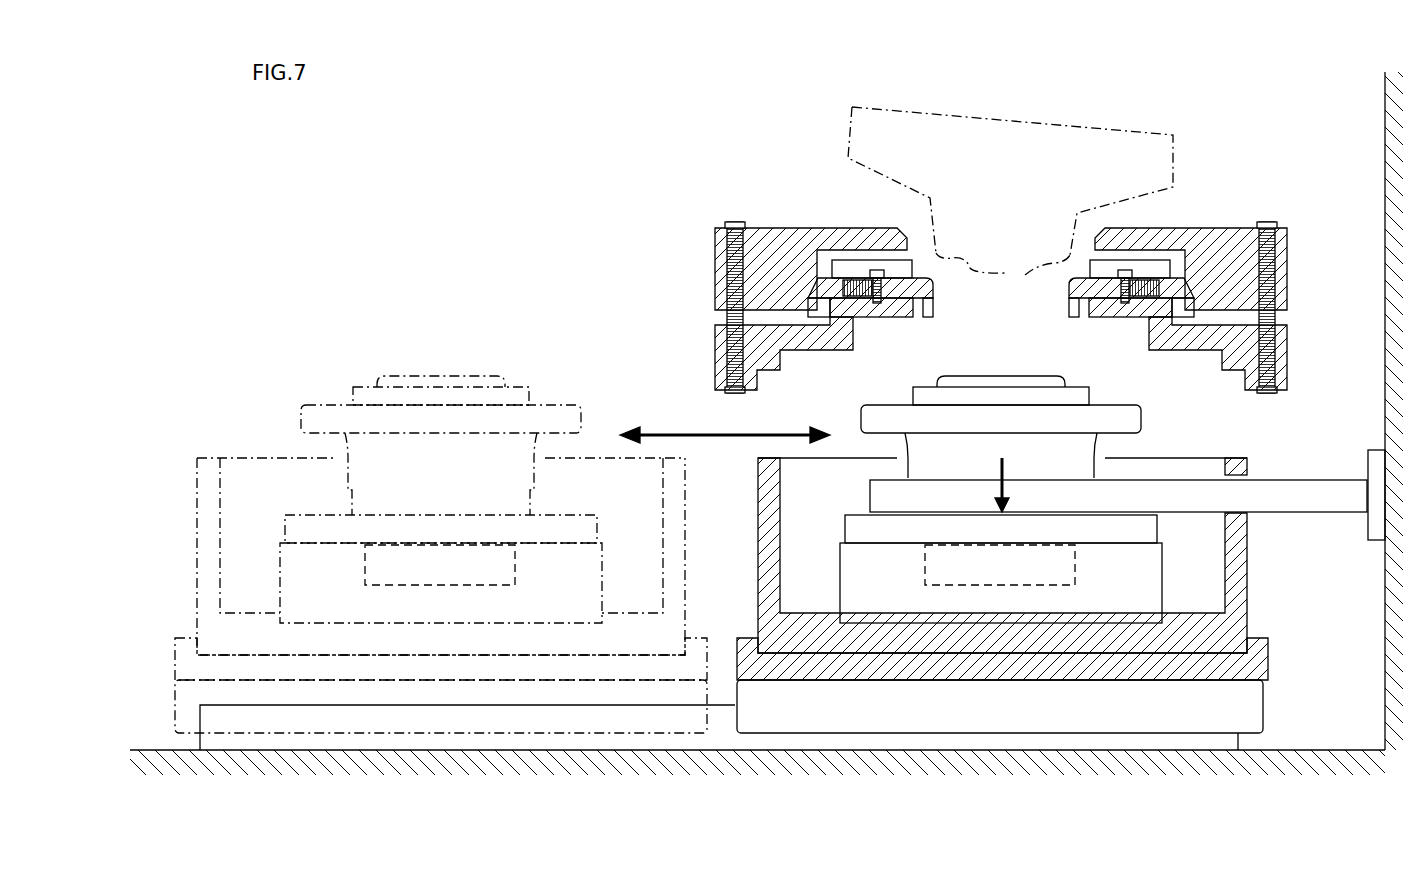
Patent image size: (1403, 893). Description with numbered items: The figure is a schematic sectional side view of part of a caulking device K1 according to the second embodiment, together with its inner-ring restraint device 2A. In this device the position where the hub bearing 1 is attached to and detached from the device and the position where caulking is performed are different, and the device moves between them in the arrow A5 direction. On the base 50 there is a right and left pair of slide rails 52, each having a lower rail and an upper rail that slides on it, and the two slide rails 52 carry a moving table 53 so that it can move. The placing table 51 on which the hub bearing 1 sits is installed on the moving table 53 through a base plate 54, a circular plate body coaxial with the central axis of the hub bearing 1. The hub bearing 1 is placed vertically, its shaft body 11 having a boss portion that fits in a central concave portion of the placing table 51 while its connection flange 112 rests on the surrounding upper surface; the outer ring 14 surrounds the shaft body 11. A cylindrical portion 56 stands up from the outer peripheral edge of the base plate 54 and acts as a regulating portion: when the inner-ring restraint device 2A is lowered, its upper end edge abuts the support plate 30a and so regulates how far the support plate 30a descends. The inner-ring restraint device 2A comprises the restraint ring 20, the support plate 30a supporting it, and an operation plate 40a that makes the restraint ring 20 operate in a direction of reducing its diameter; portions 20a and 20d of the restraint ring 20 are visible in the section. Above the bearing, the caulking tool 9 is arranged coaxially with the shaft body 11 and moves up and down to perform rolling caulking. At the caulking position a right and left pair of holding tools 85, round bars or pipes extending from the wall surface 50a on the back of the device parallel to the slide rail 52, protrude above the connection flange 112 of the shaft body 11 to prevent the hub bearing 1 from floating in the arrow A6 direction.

The caulking device K1 is at (741, 380).
The inner-ring restraint device 2A is at (940, 264).
The operation plate 40a is at (767, 226).
The support plate 30a is at (850, 330).
The restraint ring 20 is at (1001, 312).
The clamp pressing portion 20a is at (1073, 311).
The clamp pressing portion 20d is at (937, 320).
The caulking tool 9 is at (848, 130).
The hub bearing 1 is at (1066, 377).
The outer ring 14 is at (1145, 410).
The shaft body 11 is at (904, 546).
The holding tool 85 is at (868, 495).
The connection flange 112 is at (1155, 525).
The placing table 51 is at (1135, 566).
The cylindrical portion 56 is at (719, 553).
The base plate 54 is at (1242, 635).
The moving table 53 is at (1268, 660).
The slide rail 52 is at (1242, 706).
The base 50 is at (145, 750).
The wall surface 50a is at (1384, 133).
The arrow A5 direction A5 is at (725, 422).
The arrow A6 direction A6 is at (1017, 483).